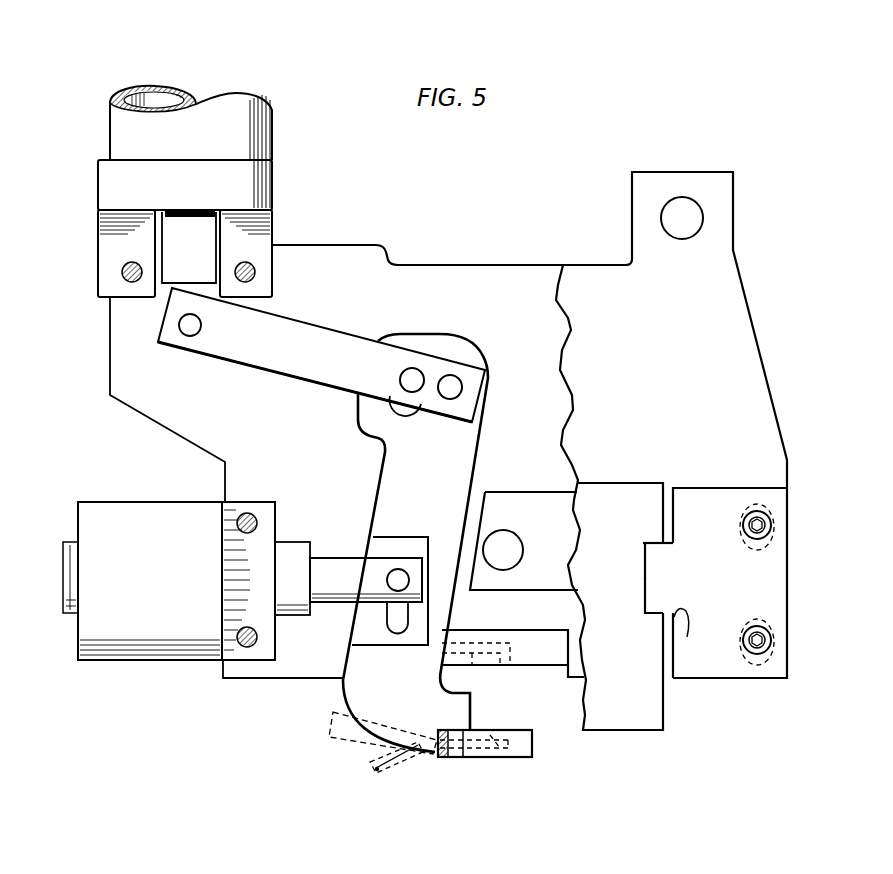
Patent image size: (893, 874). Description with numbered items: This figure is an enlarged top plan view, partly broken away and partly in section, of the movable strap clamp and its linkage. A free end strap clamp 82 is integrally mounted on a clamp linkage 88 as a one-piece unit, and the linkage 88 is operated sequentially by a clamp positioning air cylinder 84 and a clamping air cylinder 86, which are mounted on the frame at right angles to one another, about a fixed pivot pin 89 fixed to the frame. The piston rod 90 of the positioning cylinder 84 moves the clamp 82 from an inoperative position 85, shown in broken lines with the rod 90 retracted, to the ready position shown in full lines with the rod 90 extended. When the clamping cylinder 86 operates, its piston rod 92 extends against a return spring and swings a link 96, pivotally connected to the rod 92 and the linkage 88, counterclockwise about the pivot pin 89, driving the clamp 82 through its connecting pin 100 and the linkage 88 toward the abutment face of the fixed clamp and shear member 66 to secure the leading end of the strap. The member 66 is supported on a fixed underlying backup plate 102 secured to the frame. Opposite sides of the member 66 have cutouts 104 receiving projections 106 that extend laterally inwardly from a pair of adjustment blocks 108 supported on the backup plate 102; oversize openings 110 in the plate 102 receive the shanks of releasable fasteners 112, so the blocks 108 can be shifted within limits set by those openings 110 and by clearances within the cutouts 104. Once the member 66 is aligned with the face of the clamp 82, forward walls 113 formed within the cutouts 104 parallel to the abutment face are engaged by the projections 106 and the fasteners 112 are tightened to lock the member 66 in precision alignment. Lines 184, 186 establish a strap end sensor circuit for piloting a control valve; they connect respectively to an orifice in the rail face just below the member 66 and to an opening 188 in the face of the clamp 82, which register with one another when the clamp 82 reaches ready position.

The clamp and shear member 66 is at (624, 744).
The free end strap clamp 82 is at (483, 767).
The clamp positioning air cylinder 84 is at (172, 578).
The inoperative position 85 is at (340, 745).
The clamping air cylinder 86 is at (204, 150).
The clamp linkage 88 is at (378, 476).
The fixed pivot pin 89 is at (411, 378).
The piston rod 90 is at (350, 566).
The piston rod 92 is at (187, 231).
The link 96 is at (302, 331).
The connecting pin 100 is at (450, 392).
The backup plate 102 is at (542, 466).
The cutouts 104 is at (650, 586).
The projections 106 is at (642, 571).
The adjustment blocks 108 is at (771, 583).
The oversize openings 110 is at (767, 506).
The releasable fasteners 112 is at (771, 525).
The forward walls 113 is at (692, 637).
The line 184 is at (474, 668).
The line 186 is at (379, 771).
The opening 188 is at (506, 737).